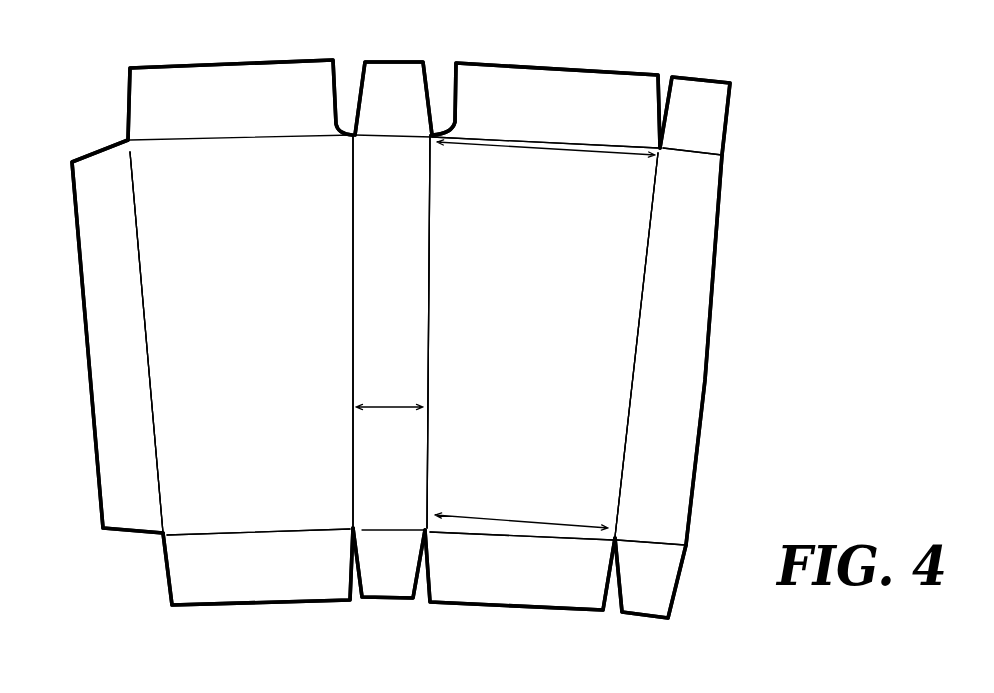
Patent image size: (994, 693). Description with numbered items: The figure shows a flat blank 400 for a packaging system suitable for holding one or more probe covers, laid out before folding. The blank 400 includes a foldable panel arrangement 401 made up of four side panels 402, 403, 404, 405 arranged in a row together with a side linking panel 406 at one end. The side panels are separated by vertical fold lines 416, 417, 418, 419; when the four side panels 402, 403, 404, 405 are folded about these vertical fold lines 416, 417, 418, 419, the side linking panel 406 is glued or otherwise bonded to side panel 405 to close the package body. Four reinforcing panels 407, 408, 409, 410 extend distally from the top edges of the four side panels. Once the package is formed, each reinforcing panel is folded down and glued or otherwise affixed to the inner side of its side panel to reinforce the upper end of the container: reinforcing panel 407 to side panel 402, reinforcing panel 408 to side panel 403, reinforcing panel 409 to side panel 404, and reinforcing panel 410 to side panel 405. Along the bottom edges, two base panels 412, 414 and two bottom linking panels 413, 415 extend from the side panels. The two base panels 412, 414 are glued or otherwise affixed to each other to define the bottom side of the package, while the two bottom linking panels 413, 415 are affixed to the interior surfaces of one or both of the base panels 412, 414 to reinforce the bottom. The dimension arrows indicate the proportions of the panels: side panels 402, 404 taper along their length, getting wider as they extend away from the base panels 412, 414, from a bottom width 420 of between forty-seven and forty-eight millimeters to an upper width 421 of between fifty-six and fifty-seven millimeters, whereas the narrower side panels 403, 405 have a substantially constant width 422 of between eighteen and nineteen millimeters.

The blank 400 is at (808, 162).
The foldable panel arrangement 401 is at (715, 308).
The side panel 402 is at (200, 468).
The side panel 403 is at (390, 323).
The side panel 404 is at (470, 303).
The side panel 405 is at (682, 365).
The side linking panel 406 is at (113, 332).
The reinforcing panel 407 is at (185, 92).
The reinforcing panel 408 is at (397, 82).
The reinforcing panel 409 is at (573, 95).
The reinforcing panel 410 is at (700, 100).
The base panel 412 is at (278, 585).
The bottom linking panel 413 is at (390, 603).
The base panel 414 is at (530, 585).
The bottom linking panel 415 is at (655, 572).
The vertical fold line 416 is at (142, 257).
The vertical fold line 417 is at (353, 262).
The vertical fold line 418 is at (432, 172).
The vertical fold line 419 is at (645, 257).
The bottom width 420 is at (515, 522).
The upper width 421 is at (528, 147).
The width 422 is at (388, 408).